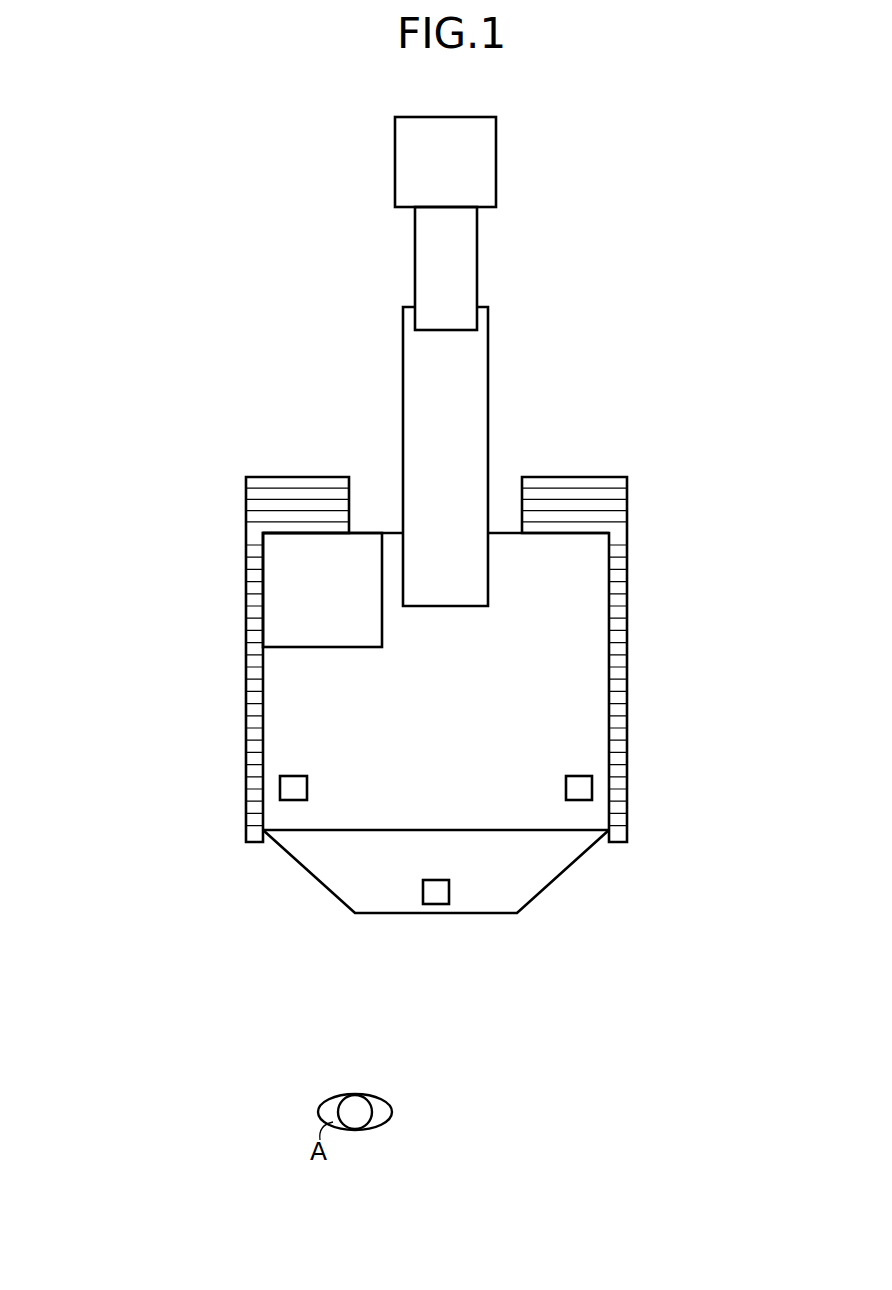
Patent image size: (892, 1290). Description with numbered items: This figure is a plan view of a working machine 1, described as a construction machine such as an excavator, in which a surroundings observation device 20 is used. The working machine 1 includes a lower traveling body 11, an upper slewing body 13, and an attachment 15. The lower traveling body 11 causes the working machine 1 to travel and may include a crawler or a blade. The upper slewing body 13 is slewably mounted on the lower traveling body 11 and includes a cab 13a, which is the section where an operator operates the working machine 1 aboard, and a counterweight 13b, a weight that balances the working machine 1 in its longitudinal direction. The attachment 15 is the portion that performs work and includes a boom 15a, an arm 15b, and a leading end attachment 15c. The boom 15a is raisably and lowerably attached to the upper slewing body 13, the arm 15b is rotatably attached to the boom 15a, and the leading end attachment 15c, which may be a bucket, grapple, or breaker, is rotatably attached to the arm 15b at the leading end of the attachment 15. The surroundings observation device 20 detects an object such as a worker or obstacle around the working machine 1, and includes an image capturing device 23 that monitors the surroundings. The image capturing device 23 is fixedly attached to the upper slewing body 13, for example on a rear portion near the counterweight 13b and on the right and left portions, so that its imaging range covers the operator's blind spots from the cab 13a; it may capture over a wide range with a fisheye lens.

The working machine 1 is at (226, 150).
The lower traveling body 11 is at (262, 483).
The upper slewing body 13 is at (272, 688).
The cab 13a is at (272, 585).
The counterweight 13b is at (300, 854).
The attachment 15 is at (600, 190).
The boom 15a is at (480, 345).
The arm 15b is at (466, 261).
The leading end attachment 15c is at (488, 197).
The surroundings observation device 20 is at (438, 877).
The image capturing device 23 is at (283, 790).